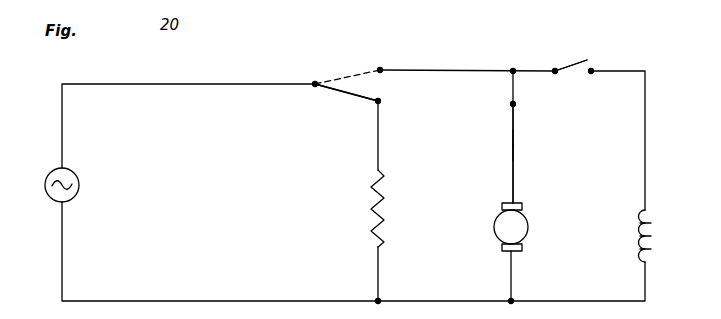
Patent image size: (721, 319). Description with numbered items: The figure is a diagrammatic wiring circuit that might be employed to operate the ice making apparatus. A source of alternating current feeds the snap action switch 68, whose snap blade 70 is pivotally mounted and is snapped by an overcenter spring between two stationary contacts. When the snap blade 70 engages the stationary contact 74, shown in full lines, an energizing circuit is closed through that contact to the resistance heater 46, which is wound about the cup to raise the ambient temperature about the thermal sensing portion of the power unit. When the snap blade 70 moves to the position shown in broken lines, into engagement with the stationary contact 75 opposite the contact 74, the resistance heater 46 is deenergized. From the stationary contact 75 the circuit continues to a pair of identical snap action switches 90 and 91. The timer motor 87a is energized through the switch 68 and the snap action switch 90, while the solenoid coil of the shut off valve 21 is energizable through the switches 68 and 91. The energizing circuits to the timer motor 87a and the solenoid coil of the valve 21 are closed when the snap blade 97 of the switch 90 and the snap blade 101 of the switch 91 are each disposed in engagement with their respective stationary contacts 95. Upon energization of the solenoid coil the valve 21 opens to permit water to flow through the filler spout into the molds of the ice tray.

The snap action switch 68 is at (320, 102).
The snap blade 70 is at (337, 92).
The stationary contact 74 is at (381, 101).
The stationary contact 75 is at (383, 69).
The resistance heater 46 is at (388, 212).
The snap action switch 90 is at (492, 130).
The snap blade 97 is at (513, 138).
The stationary contact 95 is at (513, 150).
The timer motor 87a is at (518, 228).
The snap action switch 91 is at (571, 78).
The snap blade 101 is at (568, 64).
The solenoid actuated valve 21 is at (632, 245).